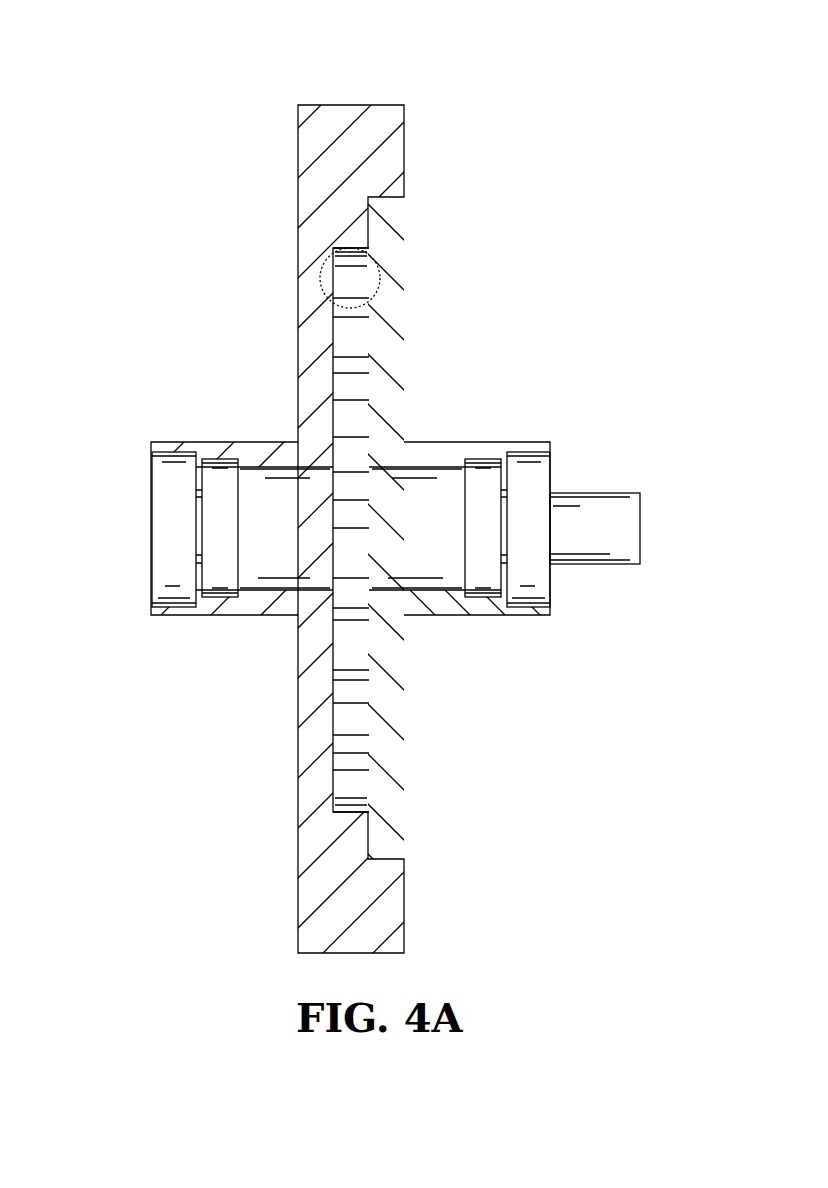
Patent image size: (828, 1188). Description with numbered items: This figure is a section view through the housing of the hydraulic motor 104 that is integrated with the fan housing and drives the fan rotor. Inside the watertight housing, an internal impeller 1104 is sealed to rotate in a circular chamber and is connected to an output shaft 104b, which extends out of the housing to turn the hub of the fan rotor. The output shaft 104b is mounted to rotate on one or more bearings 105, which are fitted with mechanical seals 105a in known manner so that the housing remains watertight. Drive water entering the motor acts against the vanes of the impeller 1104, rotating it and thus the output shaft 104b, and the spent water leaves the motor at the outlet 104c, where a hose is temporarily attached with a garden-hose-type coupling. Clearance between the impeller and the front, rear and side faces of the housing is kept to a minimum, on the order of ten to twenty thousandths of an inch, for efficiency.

The hydraulic motor 104 is at (298, 150).
The output shaft 104b is at (613, 512).
The outlet 104c is at (298, 278).
The bearings 105 is at (168, 503).
The mechanical seals 105a is at (255, 492).
The internal impeller 1104 is at (353, 387).